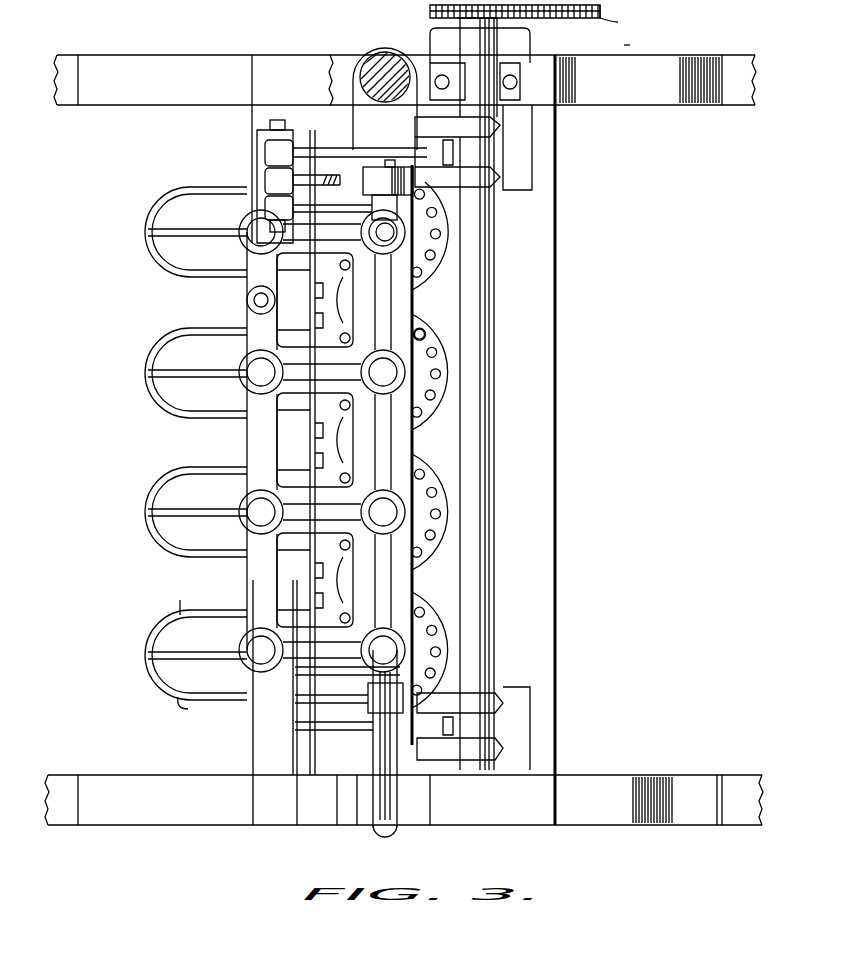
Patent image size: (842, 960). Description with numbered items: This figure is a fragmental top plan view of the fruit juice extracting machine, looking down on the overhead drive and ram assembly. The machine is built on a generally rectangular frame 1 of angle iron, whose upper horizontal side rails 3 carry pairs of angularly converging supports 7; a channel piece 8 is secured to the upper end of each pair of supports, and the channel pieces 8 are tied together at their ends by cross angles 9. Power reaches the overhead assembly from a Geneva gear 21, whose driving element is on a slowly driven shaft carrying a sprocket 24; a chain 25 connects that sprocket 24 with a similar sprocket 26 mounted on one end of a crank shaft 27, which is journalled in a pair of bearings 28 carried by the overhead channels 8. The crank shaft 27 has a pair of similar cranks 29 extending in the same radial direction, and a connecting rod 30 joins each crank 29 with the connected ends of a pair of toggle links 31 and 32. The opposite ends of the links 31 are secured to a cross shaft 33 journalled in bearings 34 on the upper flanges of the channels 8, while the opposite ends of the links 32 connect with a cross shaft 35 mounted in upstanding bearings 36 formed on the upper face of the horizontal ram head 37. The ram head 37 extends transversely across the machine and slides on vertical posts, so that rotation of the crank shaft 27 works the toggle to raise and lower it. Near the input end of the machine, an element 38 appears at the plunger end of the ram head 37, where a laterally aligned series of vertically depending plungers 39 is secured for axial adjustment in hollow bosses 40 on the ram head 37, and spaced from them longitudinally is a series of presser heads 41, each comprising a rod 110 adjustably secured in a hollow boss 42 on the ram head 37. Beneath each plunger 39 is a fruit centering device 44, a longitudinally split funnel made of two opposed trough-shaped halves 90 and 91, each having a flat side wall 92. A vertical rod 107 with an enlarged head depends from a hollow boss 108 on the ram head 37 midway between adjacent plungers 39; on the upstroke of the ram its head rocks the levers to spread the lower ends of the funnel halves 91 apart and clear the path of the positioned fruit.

The frame 1 is at (197, 830).
The upper horizontal side rails 3 is at (63, 60).
The angularly converging supports 7 is at (184, 102).
The channel piece 8 is at (470, 826).
The cross angles 9 is at (557, 510).
The Geneva gear 21 is at (638, 45).
The sprocket 24 is at (619, 20).
The chain 25 is at (602, 12).
The sprocket 26 is at (430, 11).
The crank shaft 27 is at (496, 47).
The bearings 28 is at (456, 70).
The cranks 29 is at (486, 138).
The connecting rod 30 is at (327, 155).
The toggle link 31 is at (347, 175).
The toggle link 32 is at (302, 268).
The cross shaft 33 is at (374, 748).
The bearings 34 is at (400, 806).
The cross shaft 35 is at (380, 250).
The upstanding bearings 36 is at (385, 172).
The ram head 37 is at (257, 151).
The hub 38 is at (378, 61).
The plungers 39 is at (236, 235).
The hollow bosses 40 is at (268, 391).
The presser heads 41 is at (456, 368).
The hollow boss 42 is at (370, 378).
The fruit centering device 44 is at (173, 181).
The funnel half 90 is at (192, 710).
The funnel half 91 is at (169, 603).
The flat side wall 92 is at (316, 482).
The vertical rod 107 is at (245, 301).
The hollow boss 108 is at (245, 306).
The rod 110 is at (425, 339).